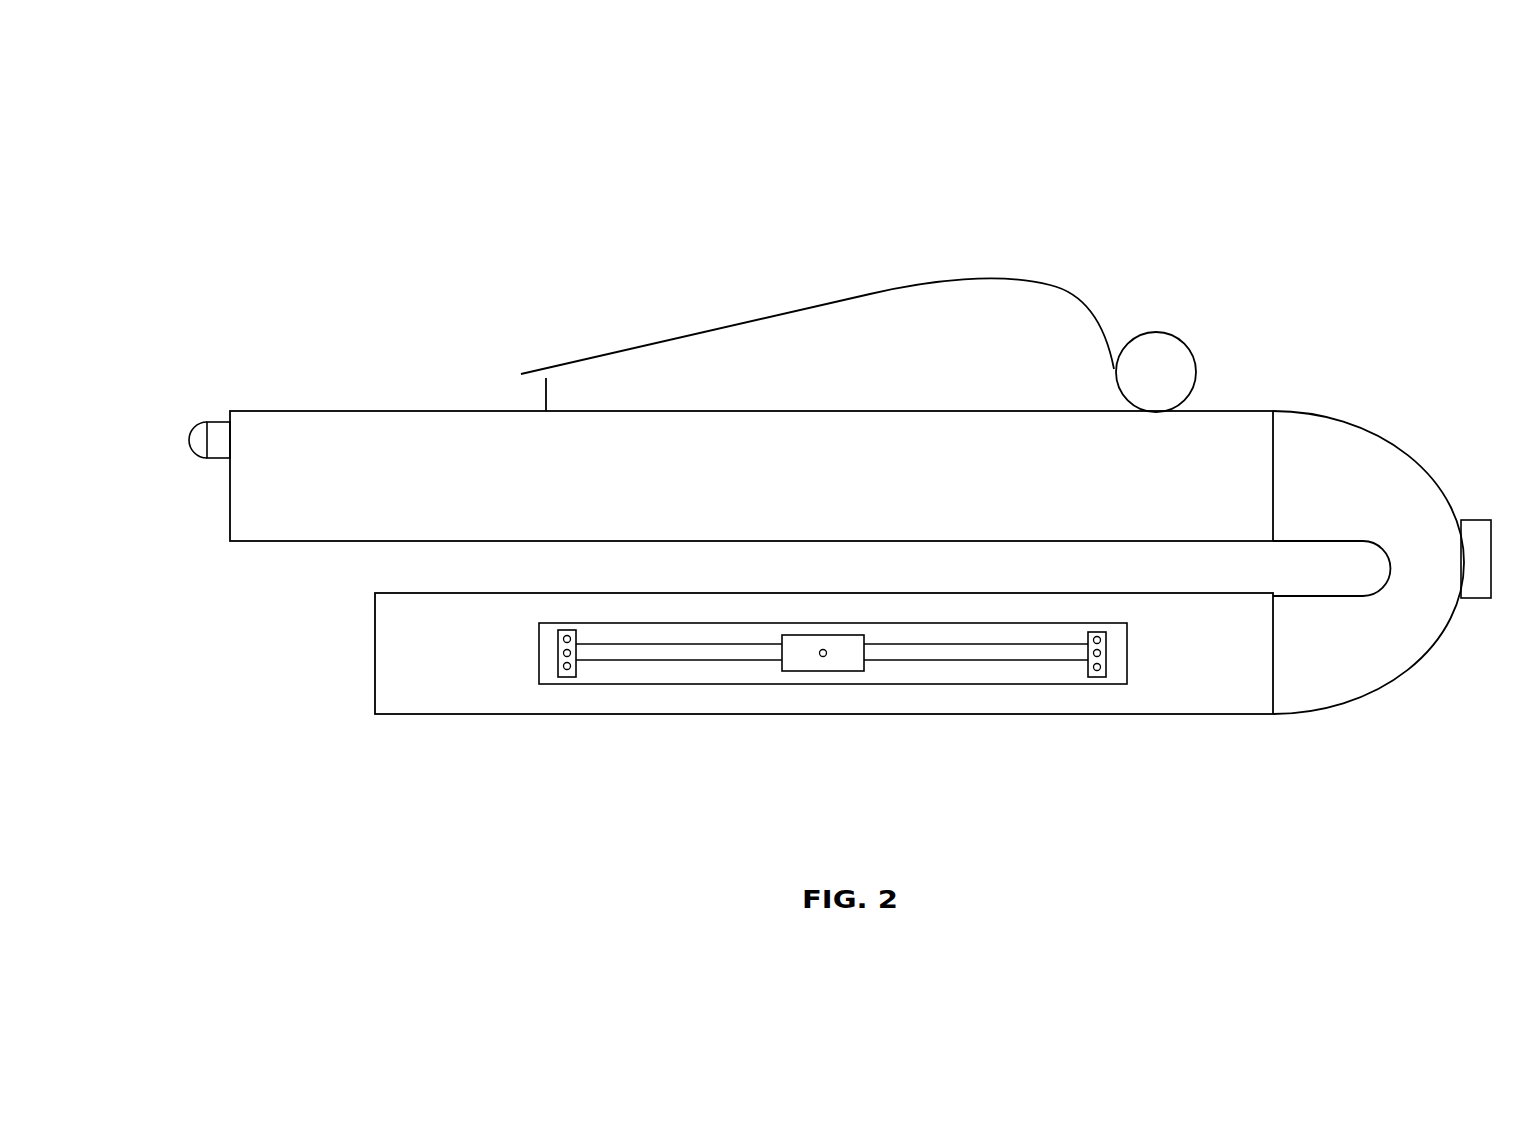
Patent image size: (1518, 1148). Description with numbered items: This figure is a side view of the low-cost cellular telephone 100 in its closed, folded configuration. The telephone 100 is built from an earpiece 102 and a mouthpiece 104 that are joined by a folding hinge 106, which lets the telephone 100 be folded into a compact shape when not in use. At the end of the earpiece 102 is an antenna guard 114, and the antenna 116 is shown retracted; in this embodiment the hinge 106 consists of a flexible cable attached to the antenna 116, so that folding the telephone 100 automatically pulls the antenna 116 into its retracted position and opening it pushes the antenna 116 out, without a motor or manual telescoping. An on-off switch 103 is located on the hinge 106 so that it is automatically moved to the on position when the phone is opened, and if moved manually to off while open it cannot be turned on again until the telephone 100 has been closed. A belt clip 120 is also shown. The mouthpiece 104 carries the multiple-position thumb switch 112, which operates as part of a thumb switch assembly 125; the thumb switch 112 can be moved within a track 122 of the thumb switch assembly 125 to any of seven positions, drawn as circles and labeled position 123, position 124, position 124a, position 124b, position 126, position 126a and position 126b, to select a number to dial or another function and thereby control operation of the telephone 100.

The cellular telephone 100 is at (430, 215).
The earpiece 102 is at (338, 410).
The on-off switch 103 is at (1484, 600).
The mouthpiece 104 is at (685, 715).
The folding hinge 106 is at (1346, 704).
The thumb switch 112 is at (822, 672).
The antenna guard 114 is at (216, 421).
The antenna 116 is at (196, 456).
The belt clip 120 is at (915, 282).
The track 122 is at (1045, 662).
The thumb switch position 123 is at (823, 648).
The thumb switch position 124 is at (563, 653).
The thumb switch position 124a is at (563, 639).
The thumb switch position 124b is at (563, 666).
The thumb switch assembly 125 is at (545, 755).
The thumb switch position 126 is at (1103, 653).
The thumb switch position 126a is at (1103, 667).
The thumb switch position 126b is at (1103, 640).